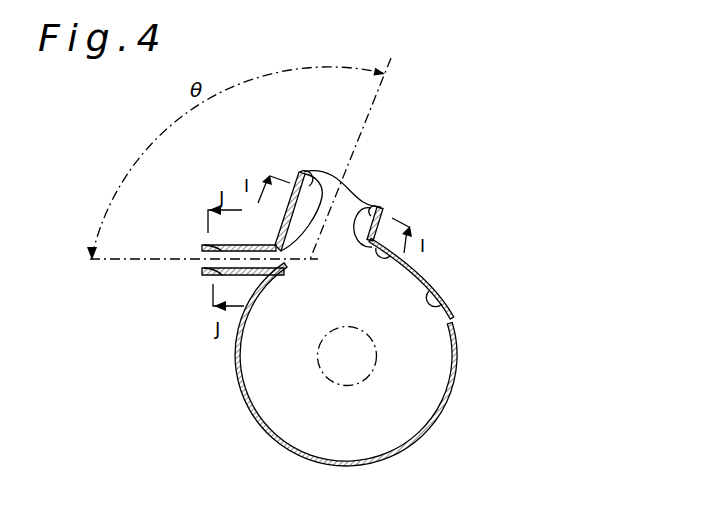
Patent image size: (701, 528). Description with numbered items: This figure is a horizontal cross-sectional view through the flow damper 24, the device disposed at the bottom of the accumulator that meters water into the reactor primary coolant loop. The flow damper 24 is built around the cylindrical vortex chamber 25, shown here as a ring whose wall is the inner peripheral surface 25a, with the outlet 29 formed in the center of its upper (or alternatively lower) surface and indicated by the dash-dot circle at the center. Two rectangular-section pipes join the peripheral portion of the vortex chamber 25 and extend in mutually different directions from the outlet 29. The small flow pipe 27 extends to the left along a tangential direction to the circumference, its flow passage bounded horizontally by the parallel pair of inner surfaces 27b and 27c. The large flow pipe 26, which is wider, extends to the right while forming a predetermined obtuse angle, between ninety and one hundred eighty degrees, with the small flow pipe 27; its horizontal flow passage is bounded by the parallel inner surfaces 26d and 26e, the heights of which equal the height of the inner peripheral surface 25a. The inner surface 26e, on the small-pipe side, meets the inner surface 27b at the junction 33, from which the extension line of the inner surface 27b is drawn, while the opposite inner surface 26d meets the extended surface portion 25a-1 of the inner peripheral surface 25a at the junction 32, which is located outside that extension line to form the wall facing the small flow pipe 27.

The flow damper 24 is at (404, 163).
The vortex chamber 25 is at (456, 326).
The inner peripheral surface 25a is at (431, 284).
The extended surface portion 25a-1 is at (399, 263).
The large flow pipe 26 is at (385, 208).
The inner surface 26d is at (378, 206).
The inner surface 26e is at (300, 171).
The small flow pipe 27 is at (204, 246).
The inner surface 27b is at (204, 247).
The inner surface 27c is at (204, 270).
The outlet 29 is at (376, 355).
The junction 32 is at (360, 203).
The junction 33 is at (321, 178).